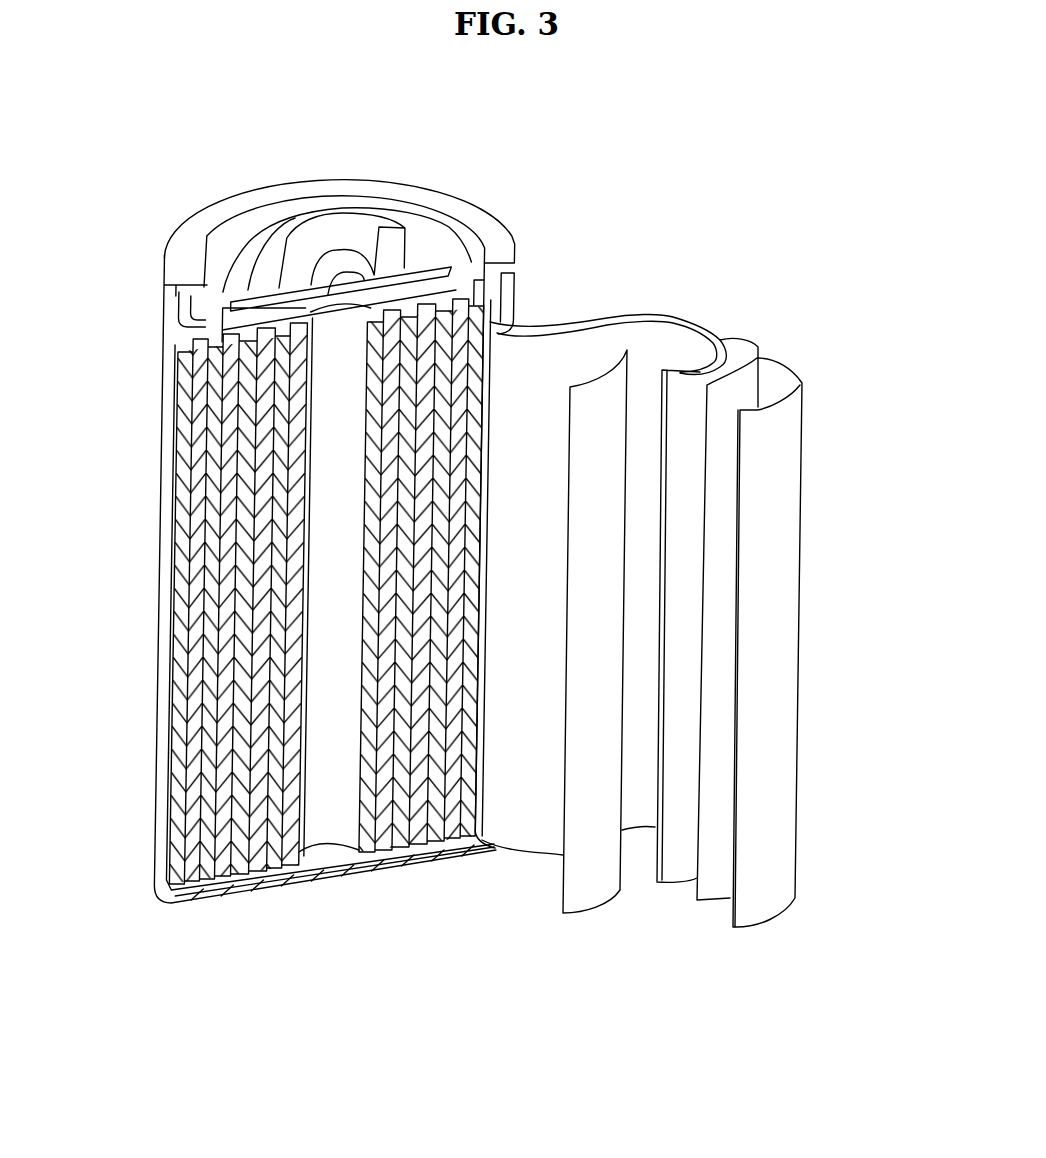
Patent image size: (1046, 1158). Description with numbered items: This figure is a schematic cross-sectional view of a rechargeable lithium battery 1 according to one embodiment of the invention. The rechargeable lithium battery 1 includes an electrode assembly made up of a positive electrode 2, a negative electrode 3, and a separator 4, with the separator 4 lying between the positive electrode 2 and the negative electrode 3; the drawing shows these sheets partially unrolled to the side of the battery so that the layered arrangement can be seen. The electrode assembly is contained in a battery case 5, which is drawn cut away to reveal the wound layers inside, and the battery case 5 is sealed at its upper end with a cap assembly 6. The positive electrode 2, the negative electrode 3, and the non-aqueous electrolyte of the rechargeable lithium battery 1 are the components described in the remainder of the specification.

The rechargeable lithium battery 1 is at (488, 546).
The positive electrode 2 is at (787, 493).
The negative electrode 3 is at (683, 385).
The separator 4 is at (752, 385).
The battery case 5 is at (153, 817).
The cap assembly 6 is at (358, 223).